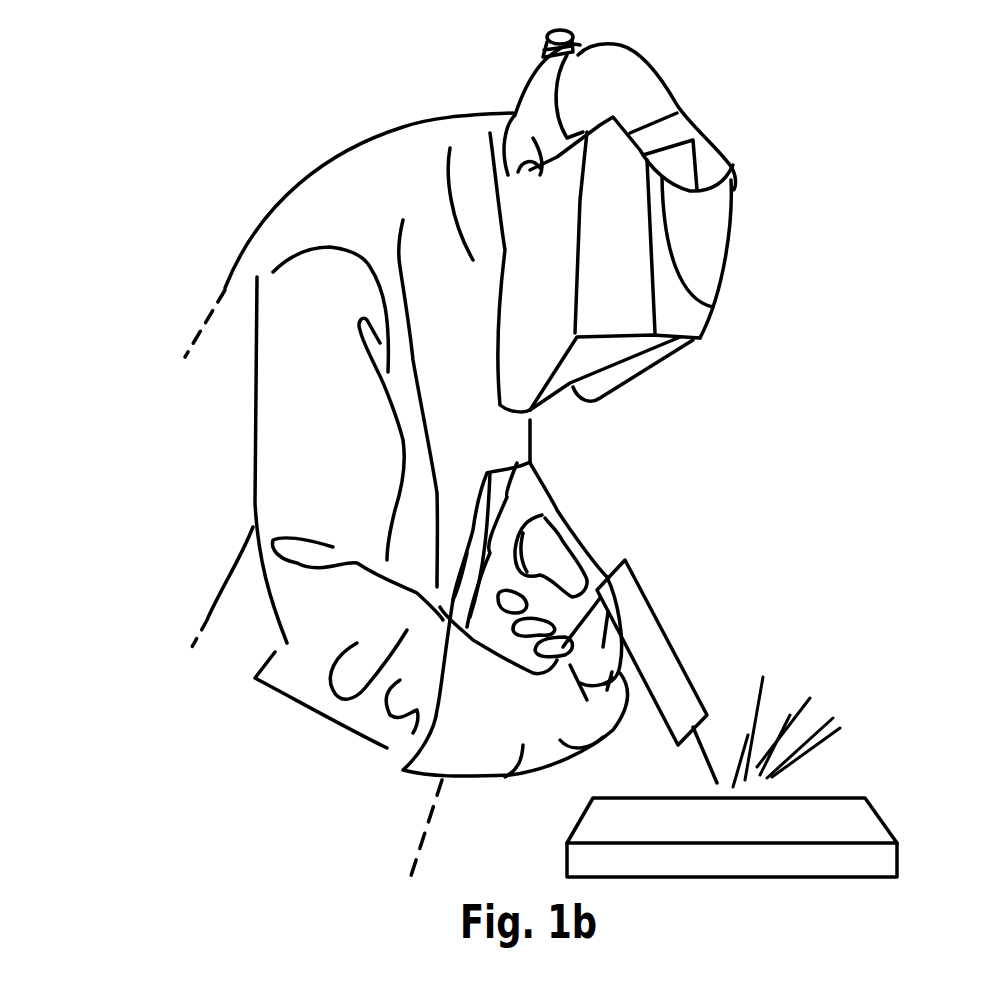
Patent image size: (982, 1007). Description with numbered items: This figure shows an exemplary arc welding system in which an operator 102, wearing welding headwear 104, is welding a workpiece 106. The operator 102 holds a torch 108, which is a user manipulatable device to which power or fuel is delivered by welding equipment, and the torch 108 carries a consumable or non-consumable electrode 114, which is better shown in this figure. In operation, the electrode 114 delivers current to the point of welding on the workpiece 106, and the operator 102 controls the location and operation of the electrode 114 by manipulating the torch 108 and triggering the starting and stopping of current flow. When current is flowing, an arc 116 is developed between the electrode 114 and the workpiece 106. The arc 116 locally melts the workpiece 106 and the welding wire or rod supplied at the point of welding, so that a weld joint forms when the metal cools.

The operator 102 is at (250, 238).
The welding headwear 104 is at (733, 160).
The workpiece 106 is at (877, 808).
The torch 108 is at (648, 593).
The electrode 114 is at (713, 747).
The arc 116 is at (760, 763).